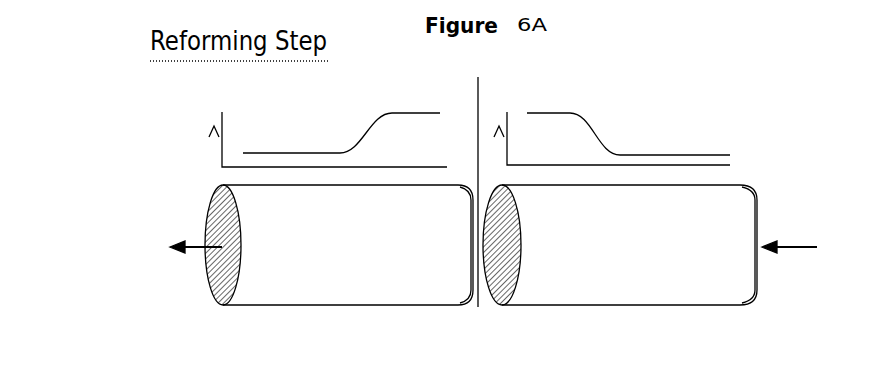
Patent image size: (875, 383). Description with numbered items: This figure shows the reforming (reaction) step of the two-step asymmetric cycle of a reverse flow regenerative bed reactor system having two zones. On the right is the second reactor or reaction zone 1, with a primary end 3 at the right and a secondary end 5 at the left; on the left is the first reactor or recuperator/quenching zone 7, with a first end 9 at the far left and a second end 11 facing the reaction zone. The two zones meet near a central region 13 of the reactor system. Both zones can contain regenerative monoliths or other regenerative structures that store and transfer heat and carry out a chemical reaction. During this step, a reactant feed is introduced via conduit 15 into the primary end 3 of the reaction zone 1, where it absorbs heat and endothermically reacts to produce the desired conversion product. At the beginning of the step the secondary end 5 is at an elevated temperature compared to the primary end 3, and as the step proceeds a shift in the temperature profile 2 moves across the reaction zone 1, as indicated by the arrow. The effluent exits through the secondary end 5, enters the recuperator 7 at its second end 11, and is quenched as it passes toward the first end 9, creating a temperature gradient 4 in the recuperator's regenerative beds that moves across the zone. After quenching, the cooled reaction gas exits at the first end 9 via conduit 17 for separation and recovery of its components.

The reaction zone 1 is at (640, 270).
The temperature profile 2 is at (580, 138).
The primary end 3 is at (750, 290).
The temperature gradient 4 is at (340, 138).
The secondary end 5 is at (498, 307).
The recuperator/quenching zone 7 is at (332, 277).
The first end 9 is at (218, 307).
The second end 11 is at (472, 292).
The central region 13 is at (480, 182).
The conduit 15 is at (790, 242).
The conduit 17 is at (195, 252).